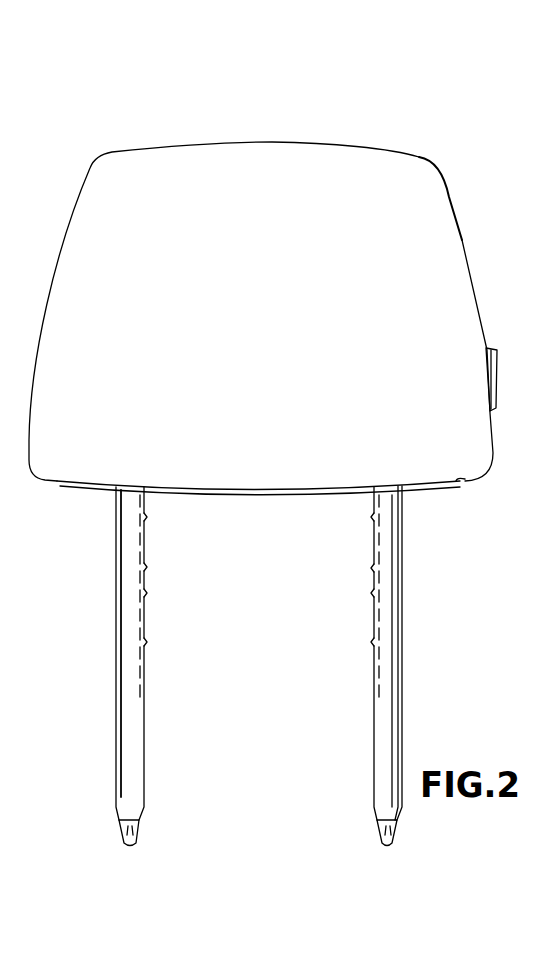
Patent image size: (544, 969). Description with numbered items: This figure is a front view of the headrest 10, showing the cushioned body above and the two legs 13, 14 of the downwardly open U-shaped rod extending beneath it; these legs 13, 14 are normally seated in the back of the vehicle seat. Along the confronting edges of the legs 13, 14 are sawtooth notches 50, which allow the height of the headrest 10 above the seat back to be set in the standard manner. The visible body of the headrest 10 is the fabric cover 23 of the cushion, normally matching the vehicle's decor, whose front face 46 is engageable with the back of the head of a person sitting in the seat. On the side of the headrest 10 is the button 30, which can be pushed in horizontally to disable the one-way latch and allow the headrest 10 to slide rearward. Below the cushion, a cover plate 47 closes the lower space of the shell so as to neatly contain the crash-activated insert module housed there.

The headrest 10 is at (262, 447).
The leg 13 is at (116, 717).
The leg 14 is at (372, 730).
The fabric cover 23 is at (450, 197).
The button 30 is at (495, 352).
The front face 46 is at (283, 335).
The cover plate 47 is at (72, 490).
The sawtooth notches 50 is at (374, 617).